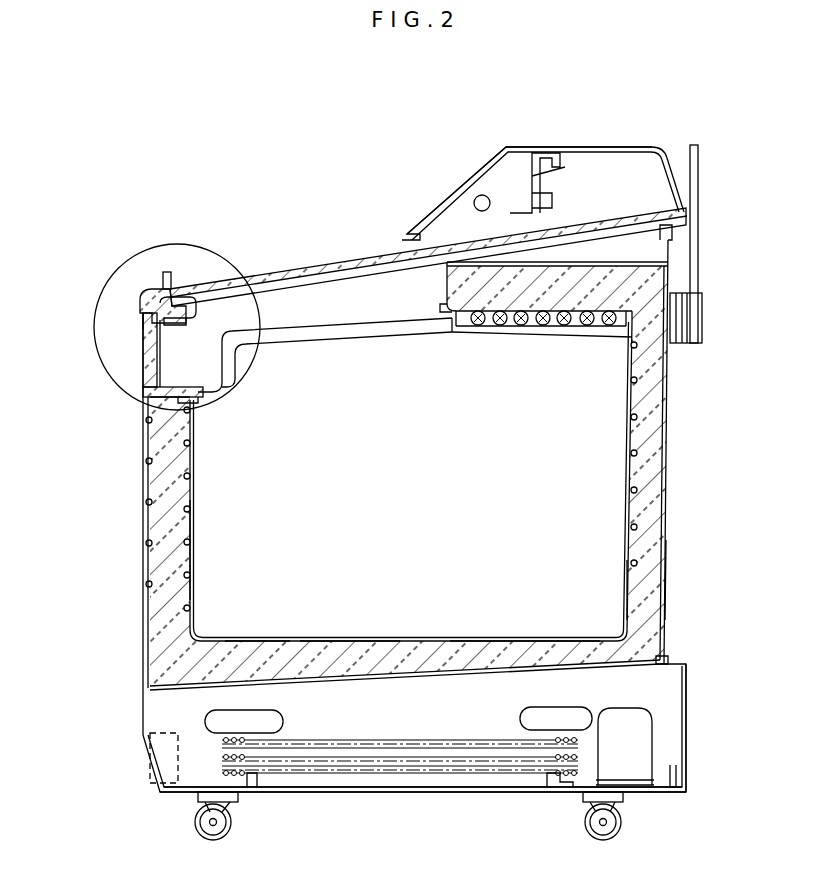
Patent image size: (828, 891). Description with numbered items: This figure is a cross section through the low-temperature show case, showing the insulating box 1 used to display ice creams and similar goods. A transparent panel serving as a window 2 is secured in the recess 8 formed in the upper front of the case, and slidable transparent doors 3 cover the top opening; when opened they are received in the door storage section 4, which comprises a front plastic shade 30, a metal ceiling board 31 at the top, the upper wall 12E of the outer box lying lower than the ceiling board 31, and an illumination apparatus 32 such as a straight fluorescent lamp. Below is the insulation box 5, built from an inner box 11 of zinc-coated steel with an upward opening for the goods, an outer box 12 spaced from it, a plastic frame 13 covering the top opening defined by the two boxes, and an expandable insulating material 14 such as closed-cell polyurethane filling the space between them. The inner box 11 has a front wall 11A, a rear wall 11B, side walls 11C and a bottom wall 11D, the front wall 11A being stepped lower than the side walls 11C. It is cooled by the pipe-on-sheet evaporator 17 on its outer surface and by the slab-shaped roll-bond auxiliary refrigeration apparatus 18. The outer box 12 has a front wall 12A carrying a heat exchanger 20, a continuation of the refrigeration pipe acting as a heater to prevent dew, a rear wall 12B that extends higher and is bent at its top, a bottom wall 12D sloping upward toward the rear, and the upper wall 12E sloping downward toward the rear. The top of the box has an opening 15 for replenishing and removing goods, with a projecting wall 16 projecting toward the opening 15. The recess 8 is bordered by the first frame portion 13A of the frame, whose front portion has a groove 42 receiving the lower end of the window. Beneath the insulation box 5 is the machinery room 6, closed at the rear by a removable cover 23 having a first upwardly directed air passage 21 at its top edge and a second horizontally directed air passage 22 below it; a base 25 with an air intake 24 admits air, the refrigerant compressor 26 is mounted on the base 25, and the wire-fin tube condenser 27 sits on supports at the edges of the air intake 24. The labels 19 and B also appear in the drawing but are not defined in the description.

The insulating box 1 is at (397, 158).
The window 2 is at (150, 362).
The slidable transparent doors 3 is at (428, 243).
The door storage section 4 is at (543, 161).
The insulation box 5 is at (675, 480).
The machinery room 6 is at (453, 731).
The recess 8 is at (137, 322).
The inner box 11 is at (630, 400).
The front wall 11A is at (193, 613).
The rear wall 11B is at (626, 598).
The side walls 11C is at (435, 518).
The bottom wall 11D is at (527, 641).
The outer box 12 is at (668, 426).
The front wall 12A is at (143, 625).
The rear wall 12B is at (670, 597).
The bottom wall 12D is at (357, 683).
The upper wall 12E is at (580, 262).
The plastic frame 13 is at (452, 298).
The first frame portion 13A is at (182, 388).
The expandable insulating material 14 is at (658, 527).
The opening 15 is at (270, 273).
The projecting wall 16 is at (498, 303).
The evaporator 17 is at (636, 456).
The auxiliary refrigeration apparatus 18 is at (562, 328).
The storage compartment 19 is at (397, 452).
The heat exchanger 20 is at (148, 507).
The first upwardly directed air passage 21 is at (674, 661).
The second horizontally directed air passage 22 is at (688, 688).
The removable cover 23 is at (688, 760).
The air intake 24 is at (417, 790).
The base 25 is at (268, 777).
The refrigerant compressor 26 is at (642, 722).
The condenser 27 is at (437, 742).
The front plastic shade 30 is at (455, 193).
The metal ceiling board 31 is at (575, 146).
The illumination apparatus 32 is at (483, 194).
The groove 42 is at (150, 402).
The detail circle B is at (219, 255).